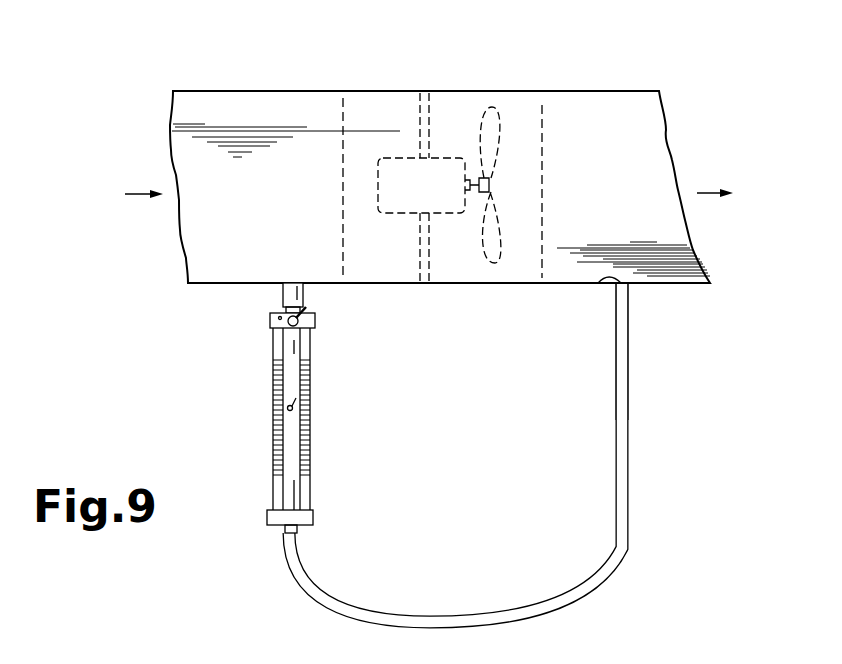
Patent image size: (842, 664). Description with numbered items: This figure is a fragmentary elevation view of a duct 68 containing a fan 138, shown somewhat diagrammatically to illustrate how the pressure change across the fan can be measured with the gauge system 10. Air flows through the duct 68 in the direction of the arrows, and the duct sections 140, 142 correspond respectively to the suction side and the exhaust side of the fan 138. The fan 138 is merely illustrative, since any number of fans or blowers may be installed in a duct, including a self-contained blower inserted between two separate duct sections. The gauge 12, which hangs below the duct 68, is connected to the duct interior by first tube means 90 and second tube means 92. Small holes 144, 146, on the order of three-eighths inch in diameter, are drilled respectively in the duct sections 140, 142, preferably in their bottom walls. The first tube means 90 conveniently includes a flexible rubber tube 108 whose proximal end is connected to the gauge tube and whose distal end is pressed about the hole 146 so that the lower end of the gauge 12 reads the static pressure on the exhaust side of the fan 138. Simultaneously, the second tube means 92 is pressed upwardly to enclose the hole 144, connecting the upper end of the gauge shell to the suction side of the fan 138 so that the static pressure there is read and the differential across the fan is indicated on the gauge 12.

The gauge system 10 is at (273, 417).
The gauge 12 is at (320, 397).
The duct 68 is at (588, 91).
The first tube means 90 is at (342, 624).
The second tube means 92 is at (258, 299).
The flexible rubber tube 108 is at (614, 574).
The fan 138 is at (506, 73).
The suction side duct section 140 is at (258, 99).
The exhaust side duct section 142 is at (640, 103).
The hole 144 is at (292, 283).
The hole 146 is at (598, 283).